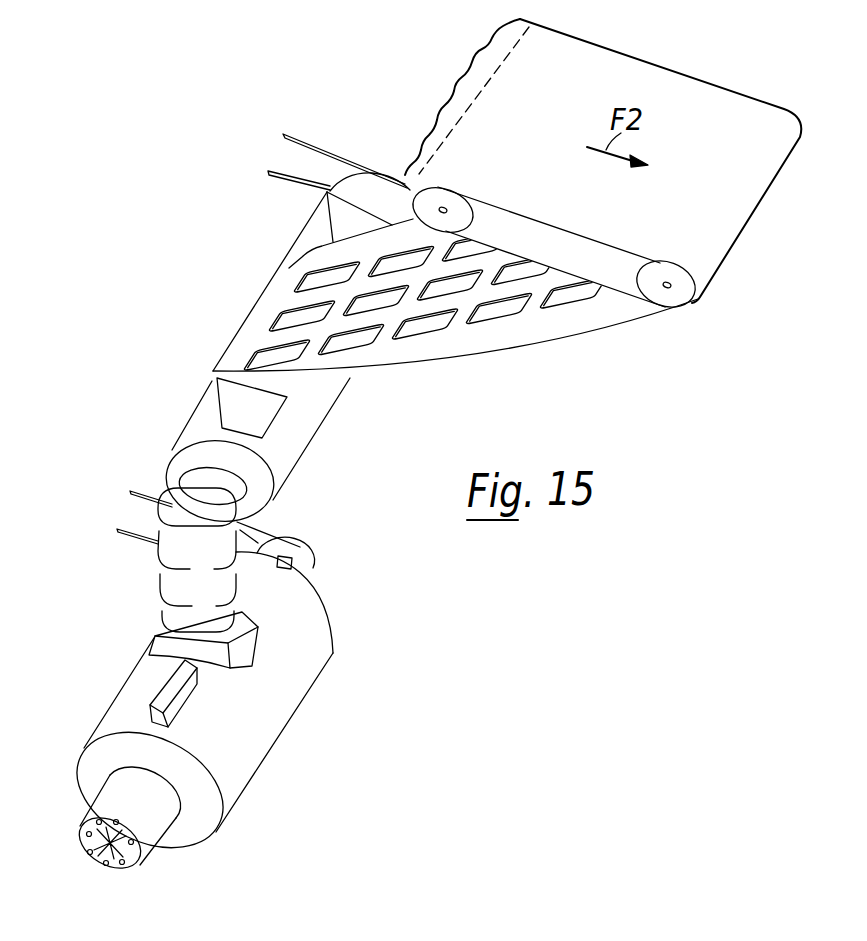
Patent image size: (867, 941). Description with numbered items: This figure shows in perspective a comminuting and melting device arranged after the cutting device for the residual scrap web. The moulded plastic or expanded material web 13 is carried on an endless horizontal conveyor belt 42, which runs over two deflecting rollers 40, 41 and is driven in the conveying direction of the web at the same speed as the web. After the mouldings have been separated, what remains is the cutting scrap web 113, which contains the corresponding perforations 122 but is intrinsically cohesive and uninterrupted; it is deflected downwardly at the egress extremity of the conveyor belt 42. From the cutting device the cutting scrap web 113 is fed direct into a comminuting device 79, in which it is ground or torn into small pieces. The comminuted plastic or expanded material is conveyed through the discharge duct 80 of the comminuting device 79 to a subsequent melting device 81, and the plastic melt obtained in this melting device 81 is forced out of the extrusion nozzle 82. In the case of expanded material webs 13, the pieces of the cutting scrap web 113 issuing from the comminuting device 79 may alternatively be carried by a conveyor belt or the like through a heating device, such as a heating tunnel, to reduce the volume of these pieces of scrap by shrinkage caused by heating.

The moulded plastic or expanded material web 13 is at (467, 88).
The deflecting roller 40 is at (455, 207).
The deflecting roller 41 is at (658, 270).
The conveyor belt 42 is at (533, 263).
The comminuting device 79 is at (316, 426).
The discharge duct 80 is at (167, 576).
The melting device 81 is at (308, 655).
The extrusion nozzle 82 is at (125, 852).
The cutting scrap web 113 is at (455, 286).
The perforations 122 is at (436, 325).